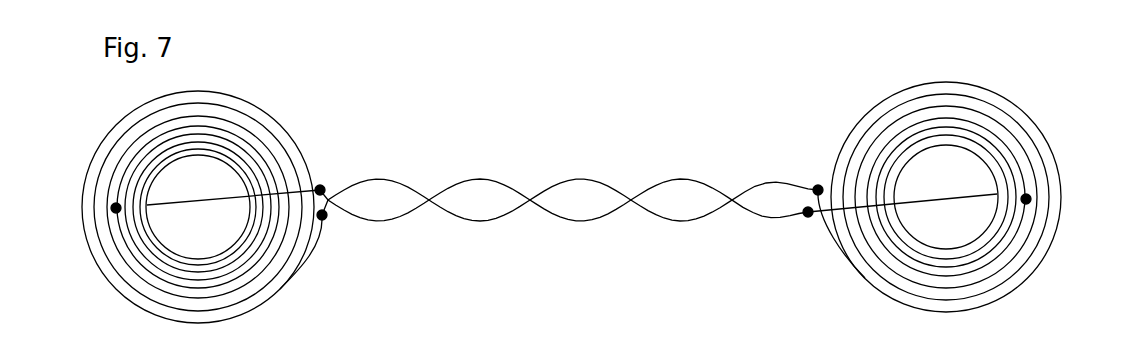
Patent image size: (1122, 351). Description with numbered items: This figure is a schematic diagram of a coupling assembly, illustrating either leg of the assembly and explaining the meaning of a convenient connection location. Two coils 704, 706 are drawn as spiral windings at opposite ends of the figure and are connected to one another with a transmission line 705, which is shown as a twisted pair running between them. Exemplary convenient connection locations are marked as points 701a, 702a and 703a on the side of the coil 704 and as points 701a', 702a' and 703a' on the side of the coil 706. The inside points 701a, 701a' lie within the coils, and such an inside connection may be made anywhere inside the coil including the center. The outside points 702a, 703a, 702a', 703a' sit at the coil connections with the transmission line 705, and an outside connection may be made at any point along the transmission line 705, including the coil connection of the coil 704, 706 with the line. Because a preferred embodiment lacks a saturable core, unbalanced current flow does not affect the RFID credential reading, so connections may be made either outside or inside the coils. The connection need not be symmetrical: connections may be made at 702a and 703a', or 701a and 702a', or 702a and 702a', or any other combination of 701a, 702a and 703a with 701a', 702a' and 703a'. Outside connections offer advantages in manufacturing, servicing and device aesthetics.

The coil 704 is at (280, 121).
The coil 706 is at (848, 124).
The transmission line 705 is at (587, 178).
The convenient connection location (inside point) 701a is at (86, 247).
The convenient connection location (outside point) 702a is at (346, 171).
The convenient connection location (outside point) 703a is at (346, 245).
The convenient connection location (outside point) 703a' is at (788, 174).
The convenient connection location (outside point) 702a' is at (783, 236).
The convenient connection location (inside point) 701a' is at (1065, 243).